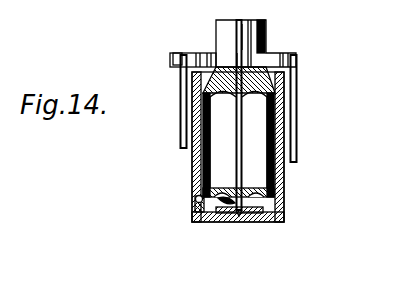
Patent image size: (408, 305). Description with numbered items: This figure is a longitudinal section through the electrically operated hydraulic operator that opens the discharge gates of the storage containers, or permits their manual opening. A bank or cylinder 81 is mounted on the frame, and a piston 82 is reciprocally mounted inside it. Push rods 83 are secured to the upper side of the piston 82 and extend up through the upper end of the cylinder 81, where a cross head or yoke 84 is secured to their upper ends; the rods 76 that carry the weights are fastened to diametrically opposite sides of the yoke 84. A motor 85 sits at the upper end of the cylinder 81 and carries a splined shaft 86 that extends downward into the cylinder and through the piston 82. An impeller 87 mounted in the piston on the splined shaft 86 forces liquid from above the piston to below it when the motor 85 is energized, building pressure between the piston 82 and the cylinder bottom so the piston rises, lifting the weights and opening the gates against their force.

The rods 76 is at (185, 120).
The cylinder 81 is at (283, 172).
The piston 82 is at (197, 205).
The push rods 83 is at (207, 150).
The cross head 84 is at (176, 54).
The motor 85 is at (262, 42).
The splined shaft 86 is at (240, 143).
The impeller 87 is at (283, 213).